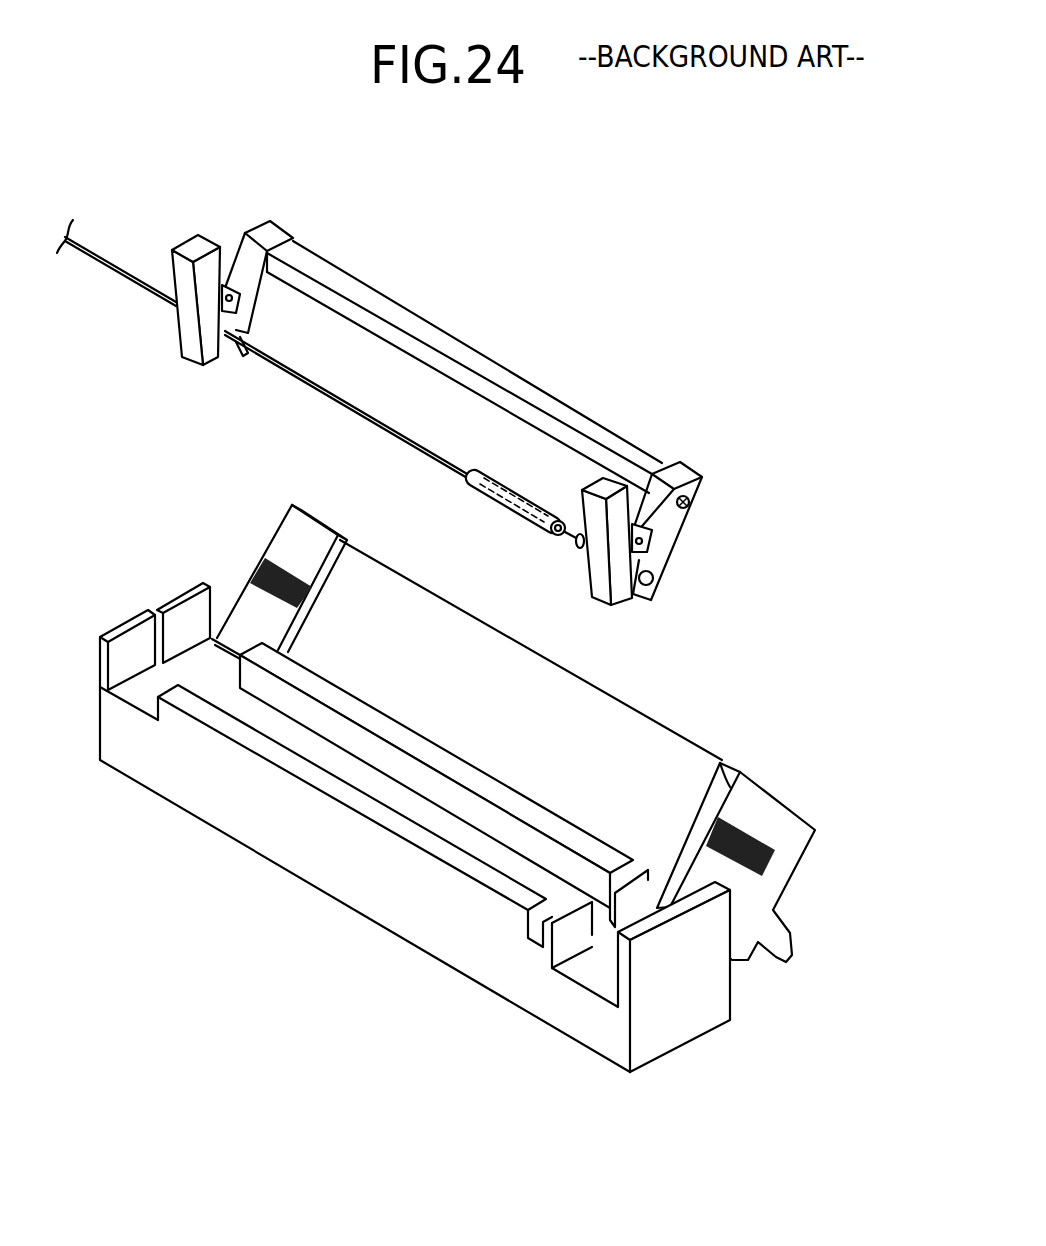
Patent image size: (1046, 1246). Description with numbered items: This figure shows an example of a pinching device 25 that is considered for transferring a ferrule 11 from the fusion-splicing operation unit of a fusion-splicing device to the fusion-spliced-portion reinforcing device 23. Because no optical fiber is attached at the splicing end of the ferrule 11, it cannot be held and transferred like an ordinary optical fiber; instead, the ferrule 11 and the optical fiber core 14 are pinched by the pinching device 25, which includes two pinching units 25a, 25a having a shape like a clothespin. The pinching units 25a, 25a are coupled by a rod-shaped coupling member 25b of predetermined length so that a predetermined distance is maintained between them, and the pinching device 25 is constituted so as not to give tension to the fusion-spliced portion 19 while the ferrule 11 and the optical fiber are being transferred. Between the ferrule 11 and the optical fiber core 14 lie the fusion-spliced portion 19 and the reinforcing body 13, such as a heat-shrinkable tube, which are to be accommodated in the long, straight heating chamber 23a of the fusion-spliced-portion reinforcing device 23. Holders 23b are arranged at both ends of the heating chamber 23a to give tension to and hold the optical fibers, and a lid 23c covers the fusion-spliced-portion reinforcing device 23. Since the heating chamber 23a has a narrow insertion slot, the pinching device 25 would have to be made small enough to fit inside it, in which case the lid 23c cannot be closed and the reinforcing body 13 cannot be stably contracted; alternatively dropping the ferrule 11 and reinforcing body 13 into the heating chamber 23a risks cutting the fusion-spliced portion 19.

The ferrule 11 is at (581, 546).
The reinforcing body 13 is at (511, 510).
The optical fiber core 14 is at (118, 262).
The fusion-spliced portion 19 is at (525, 507).
The fusion-spliced-portion reinforcing device 23 is at (460, 742).
The heating chamber 23a is at (360, 770).
The holders 23b is at (288, 545).
The lid 23c is at (645, 753).
The pinching device 25 is at (435, 405).
The pinching units 25a is at (187, 307).
The coupling member 25b is at (453, 350).